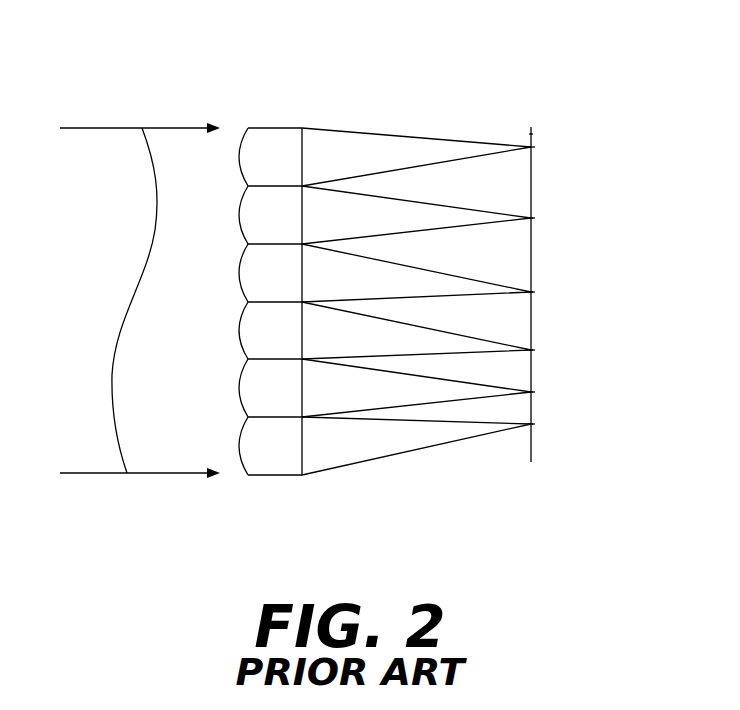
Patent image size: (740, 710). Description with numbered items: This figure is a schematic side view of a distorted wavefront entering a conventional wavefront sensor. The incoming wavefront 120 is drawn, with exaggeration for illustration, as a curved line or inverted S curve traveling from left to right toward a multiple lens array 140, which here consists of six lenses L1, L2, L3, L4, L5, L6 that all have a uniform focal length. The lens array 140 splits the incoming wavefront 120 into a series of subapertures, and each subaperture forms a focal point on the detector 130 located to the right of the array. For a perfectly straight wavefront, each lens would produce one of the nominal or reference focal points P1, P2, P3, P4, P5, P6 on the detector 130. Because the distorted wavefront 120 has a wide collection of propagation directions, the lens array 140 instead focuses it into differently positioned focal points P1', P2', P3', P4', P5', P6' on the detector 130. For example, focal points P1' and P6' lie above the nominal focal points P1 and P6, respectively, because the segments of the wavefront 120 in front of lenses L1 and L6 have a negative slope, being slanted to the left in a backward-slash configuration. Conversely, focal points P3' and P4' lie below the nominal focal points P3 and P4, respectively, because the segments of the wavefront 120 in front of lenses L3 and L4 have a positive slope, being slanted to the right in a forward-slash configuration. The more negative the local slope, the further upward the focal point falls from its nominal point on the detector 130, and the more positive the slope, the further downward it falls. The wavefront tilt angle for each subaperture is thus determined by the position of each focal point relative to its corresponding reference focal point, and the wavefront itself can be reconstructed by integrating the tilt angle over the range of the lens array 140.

The wavefront 120 is at (142, 476).
The detector 130 is at (538, 128).
The multiple lens array 140 is at (276, 128).
The lens L1 is at (250, 154).
The lens L2 is at (250, 212).
The lens L3 is at (250, 270).
The lens L4 is at (250, 327).
The lens L5 is at (250, 385).
The lens L6 is at (250, 443).
The nominal focal point P1 is at (563, 158).
The nominal focal point P2 is at (563, 196).
The nominal focal point P3 is at (563, 266).
The nominal focal point P4 is at (563, 329).
The nominal focal point P5 is at (563, 376).
The nominal focal point P6 is at (563, 448).
The focal point P1' is at (593, 130).
The focal point P2' is at (593, 217).
The focal point P3' is at (593, 293).
The focal point P4' is at (593, 351).
The focal point P5' is at (593, 395).
The focal point P6' is at (593, 427).